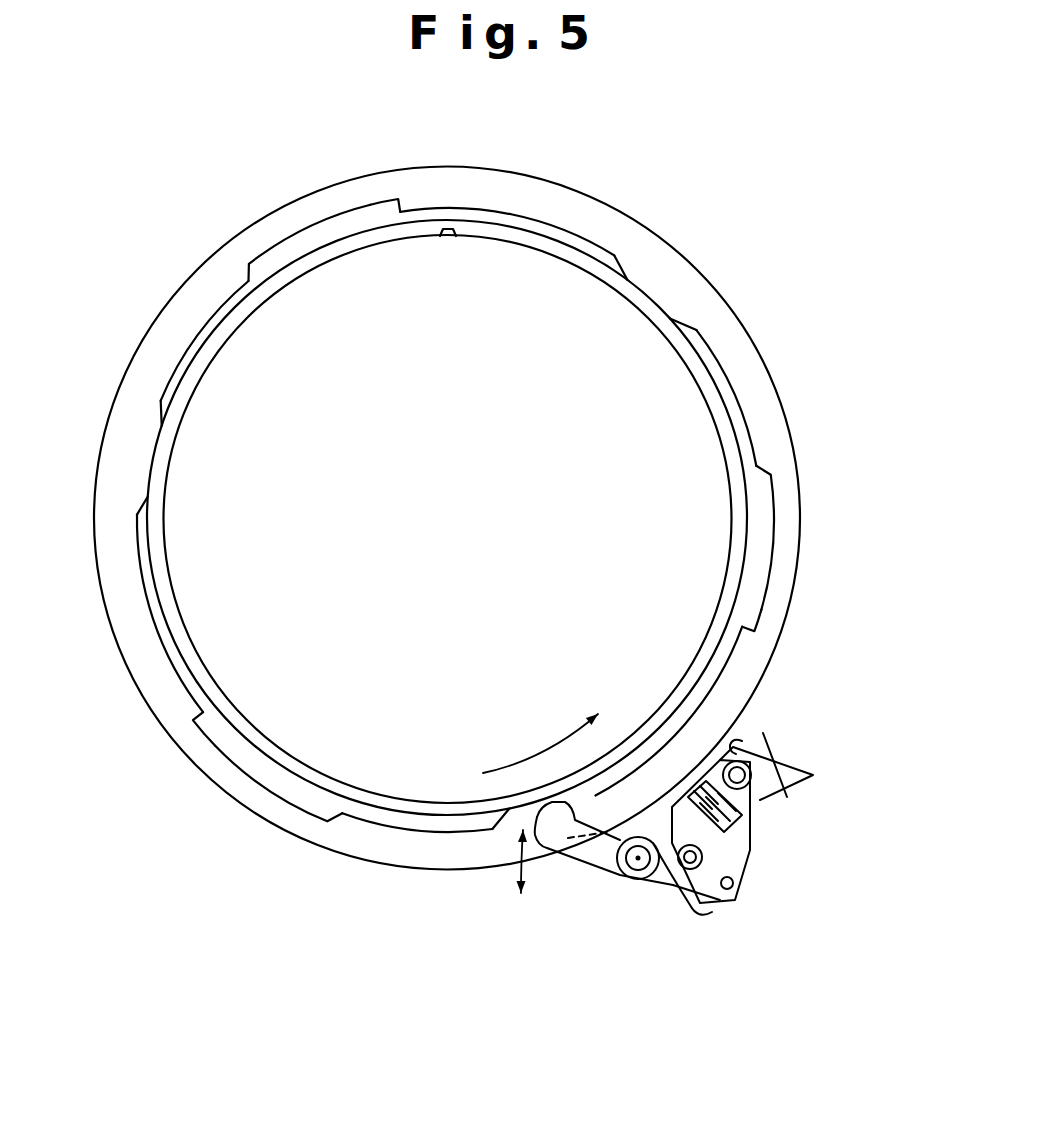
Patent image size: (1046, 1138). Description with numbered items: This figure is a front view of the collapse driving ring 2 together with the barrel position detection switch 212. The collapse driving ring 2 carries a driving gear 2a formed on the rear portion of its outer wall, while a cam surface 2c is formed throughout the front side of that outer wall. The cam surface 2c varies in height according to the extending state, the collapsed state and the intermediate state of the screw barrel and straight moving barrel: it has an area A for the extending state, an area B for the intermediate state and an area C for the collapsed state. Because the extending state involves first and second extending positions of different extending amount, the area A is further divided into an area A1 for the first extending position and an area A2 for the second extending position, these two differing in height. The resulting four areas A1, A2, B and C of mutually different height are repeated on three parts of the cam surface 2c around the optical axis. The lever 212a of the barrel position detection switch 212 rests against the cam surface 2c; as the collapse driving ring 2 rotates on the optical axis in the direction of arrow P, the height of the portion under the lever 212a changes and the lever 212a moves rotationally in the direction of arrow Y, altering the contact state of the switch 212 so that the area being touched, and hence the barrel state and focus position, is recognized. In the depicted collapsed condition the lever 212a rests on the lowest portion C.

The collapse driving ring 2 is at (630, 190).
The driving gear 2a is at (797, 462).
The cam surface 2c is at (320, 825).
The area associated with the extending state A is at (245, 167).
The area associated with the first extending position A1 is at (291, 236).
The area associated with the second extending position A2 is at (373, 203).
The area associated with the intermediate state B is at (500, 211).
The area associated with the collapsed state C is at (657, 302).
The arrow indicating rotation direction P is at (553, 730).
The arrow indicating lever movement direction Y is at (520, 876).
The barrel position detection switch 212 is at (636, 897).
The lever 212a is at (594, 858).